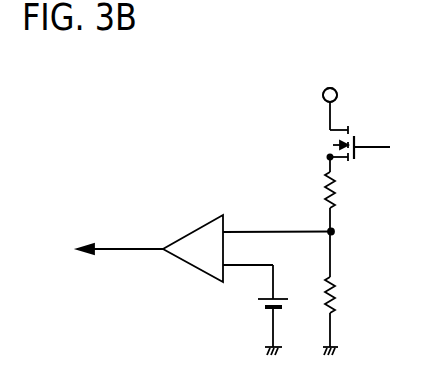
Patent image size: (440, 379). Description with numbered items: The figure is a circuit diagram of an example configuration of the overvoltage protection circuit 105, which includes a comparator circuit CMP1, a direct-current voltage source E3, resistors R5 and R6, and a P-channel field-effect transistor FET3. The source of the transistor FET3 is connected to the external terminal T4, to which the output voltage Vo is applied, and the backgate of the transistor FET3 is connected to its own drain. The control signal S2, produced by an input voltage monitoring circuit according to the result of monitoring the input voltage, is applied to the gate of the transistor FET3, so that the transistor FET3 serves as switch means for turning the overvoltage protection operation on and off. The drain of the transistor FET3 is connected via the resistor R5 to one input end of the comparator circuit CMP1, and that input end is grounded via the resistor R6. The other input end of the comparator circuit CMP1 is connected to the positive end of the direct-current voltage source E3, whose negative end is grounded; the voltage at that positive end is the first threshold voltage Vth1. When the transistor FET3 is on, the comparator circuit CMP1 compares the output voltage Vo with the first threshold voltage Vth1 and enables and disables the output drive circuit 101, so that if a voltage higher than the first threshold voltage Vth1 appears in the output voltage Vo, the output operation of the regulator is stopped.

The overvoltage protection circuit 105 is at (141, 108).
The external terminal T4 is at (325, 89).
The output voltage Vo is at (345, 86).
The P-channel field-effect transistor FET3 is at (315, 143).
The control signal S2 is at (388, 147).
The resistor R5 is at (346, 190).
The resistor R6 is at (346, 295).
The comparator circuit CMP1 is at (192, 230).
The first threshold voltage Vth1 is at (256, 252).
The direct-current voltage source E3 is at (260, 304).
The output drive circuit 101 is at (100, 288).